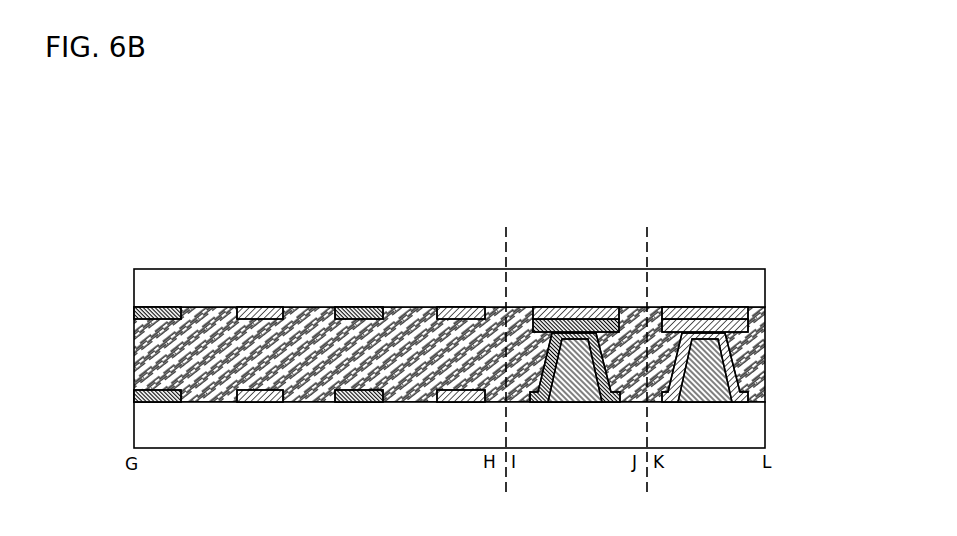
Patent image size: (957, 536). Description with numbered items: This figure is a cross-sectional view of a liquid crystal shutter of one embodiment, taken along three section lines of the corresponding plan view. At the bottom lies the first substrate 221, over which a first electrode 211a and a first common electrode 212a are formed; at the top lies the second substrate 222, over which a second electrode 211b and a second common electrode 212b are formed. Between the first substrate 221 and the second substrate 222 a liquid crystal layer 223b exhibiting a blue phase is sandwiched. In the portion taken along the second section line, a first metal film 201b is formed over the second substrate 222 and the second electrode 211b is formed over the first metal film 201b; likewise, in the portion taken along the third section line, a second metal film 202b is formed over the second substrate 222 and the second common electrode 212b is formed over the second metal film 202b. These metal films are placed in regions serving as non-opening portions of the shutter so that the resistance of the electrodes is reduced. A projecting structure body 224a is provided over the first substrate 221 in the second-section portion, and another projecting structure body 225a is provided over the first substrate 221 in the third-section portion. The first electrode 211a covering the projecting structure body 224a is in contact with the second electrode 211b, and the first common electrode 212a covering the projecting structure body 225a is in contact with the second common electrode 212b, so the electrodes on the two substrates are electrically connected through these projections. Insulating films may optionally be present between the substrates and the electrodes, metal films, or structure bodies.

The first metal film 201b is at (610, 310).
The second metal film 202b is at (698, 310).
The first electrode 211a is at (150, 402).
The second electrode 211b is at (152, 307).
The first common electrode 212a is at (247, 392).
The second common electrode 212b is at (258, 307).
The first substrate 221 is at (315, 420).
The second substrate 222 is at (195, 285).
The liquid crystal layer 223b is at (208, 362).
The projecting structure body 224a is at (577, 393).
The projecting structure body 225a is at (717, 383).